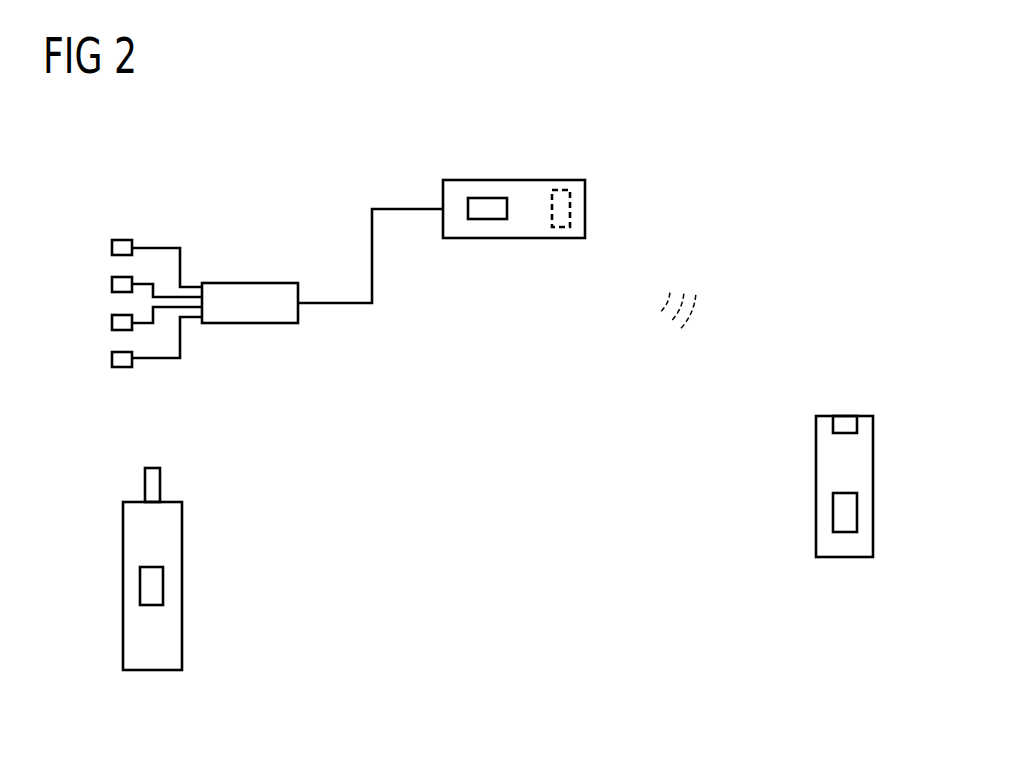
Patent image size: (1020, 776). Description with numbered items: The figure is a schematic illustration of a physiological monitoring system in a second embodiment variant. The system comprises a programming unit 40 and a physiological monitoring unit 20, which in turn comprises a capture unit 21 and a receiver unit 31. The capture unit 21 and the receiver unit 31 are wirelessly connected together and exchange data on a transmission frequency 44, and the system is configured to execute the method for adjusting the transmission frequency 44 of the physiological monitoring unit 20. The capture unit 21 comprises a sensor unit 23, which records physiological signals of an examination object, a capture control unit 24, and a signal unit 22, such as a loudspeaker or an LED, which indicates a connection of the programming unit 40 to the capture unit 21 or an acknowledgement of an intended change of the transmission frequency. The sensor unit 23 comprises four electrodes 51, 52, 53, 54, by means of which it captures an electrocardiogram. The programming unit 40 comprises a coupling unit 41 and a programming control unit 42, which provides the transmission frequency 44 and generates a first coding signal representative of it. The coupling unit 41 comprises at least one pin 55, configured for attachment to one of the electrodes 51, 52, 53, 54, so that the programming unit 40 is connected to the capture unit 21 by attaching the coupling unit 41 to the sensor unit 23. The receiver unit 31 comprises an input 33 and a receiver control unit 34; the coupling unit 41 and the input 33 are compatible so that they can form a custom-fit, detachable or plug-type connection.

The physiological monitoring unit 20 is at (738, 141).
The capture unit 21 is at (468, 222).
The signal unit 22 is at (572, 212).
The sensor unit 23 is at (244, 278).
The capture control unit 24 is at (488, 220).
The receiver unit 31 is at (830, 486).
The input 33 is at (857, 423).
The receiver control unit 34 is at (857, 510).
The programming unit 40 is at (149, 569).
The coupling unit 41 is at (89, 486).
The programming control unit 42 is at (140, 587).
The transmission frequency 44 is at (696, 270).
The electrode 51 is at (154, 245).
The electrode 52 is at (146, 287).
The electrode 53 is at (146, 325).
The electrode 54 is at (153, 362).
The pin 55 is at (143, 485).